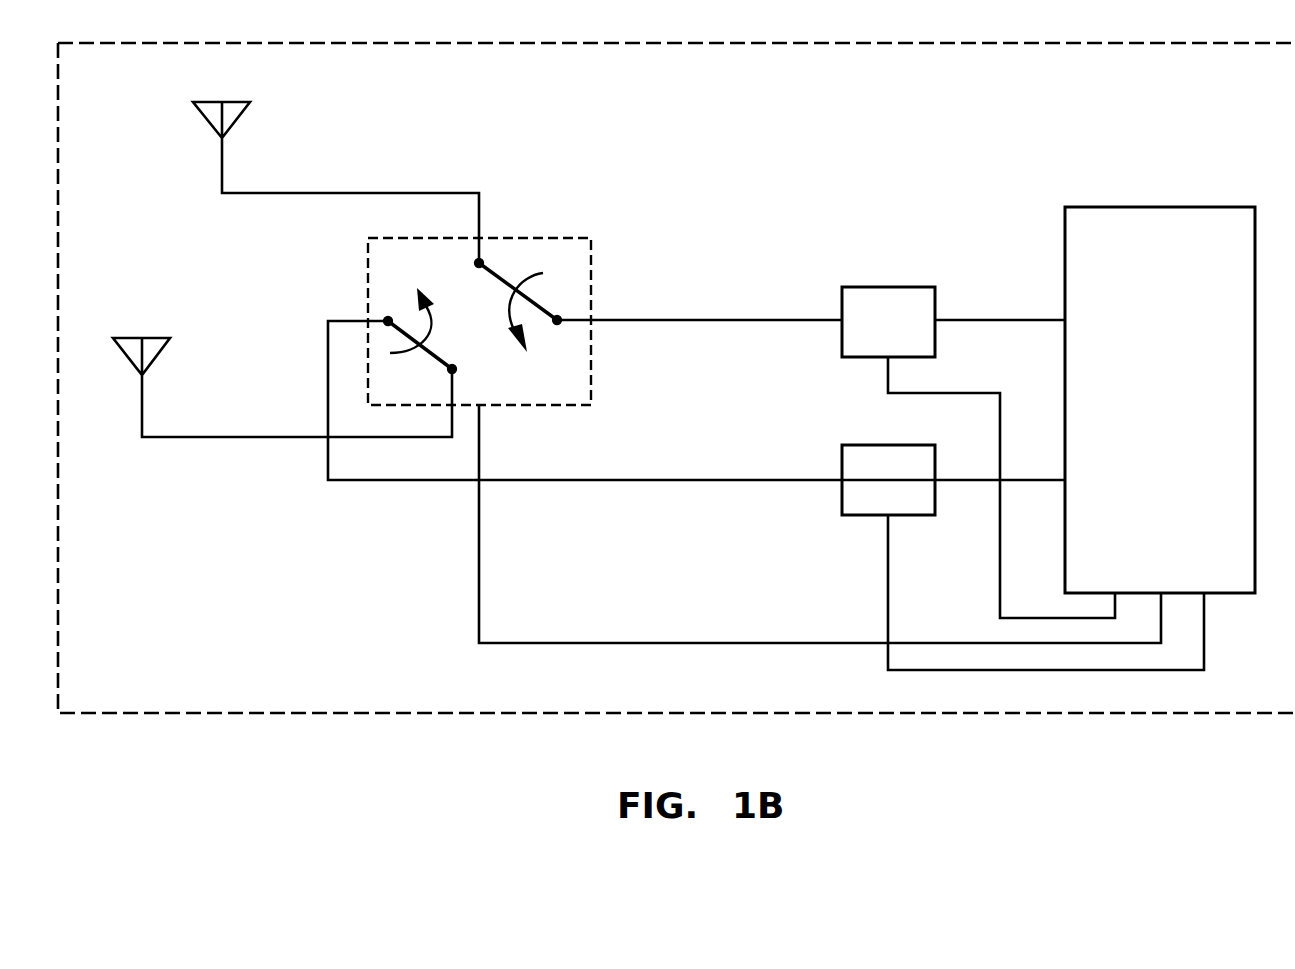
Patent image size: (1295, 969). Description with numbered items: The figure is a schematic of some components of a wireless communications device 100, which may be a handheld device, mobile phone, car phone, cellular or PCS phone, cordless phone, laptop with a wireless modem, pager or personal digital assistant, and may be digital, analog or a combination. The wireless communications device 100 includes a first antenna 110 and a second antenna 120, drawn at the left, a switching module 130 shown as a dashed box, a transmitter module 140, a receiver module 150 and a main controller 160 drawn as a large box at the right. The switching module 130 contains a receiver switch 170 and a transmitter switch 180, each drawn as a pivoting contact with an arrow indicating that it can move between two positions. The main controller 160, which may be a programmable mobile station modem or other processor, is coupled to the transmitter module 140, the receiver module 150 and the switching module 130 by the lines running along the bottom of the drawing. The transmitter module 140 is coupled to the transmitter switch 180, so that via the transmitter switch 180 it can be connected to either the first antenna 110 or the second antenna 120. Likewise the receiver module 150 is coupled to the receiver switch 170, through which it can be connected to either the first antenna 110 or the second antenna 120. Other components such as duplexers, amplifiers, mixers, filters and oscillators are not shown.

The wireless communications device 100 is at (1218, 100).
The first antenna 110 is at (222, 168).
The second antenna 120 is at (142, 402).
The switching module 130 is at (500, 234).
The transmitter module 140 is at (870, 287).
The receiver module 150 is at (868, 515).
The main controller 160 is at (1187, 413).
The receiver switch 170 is at (433, 358).
The transmitter switch 180 is at (543, 303).